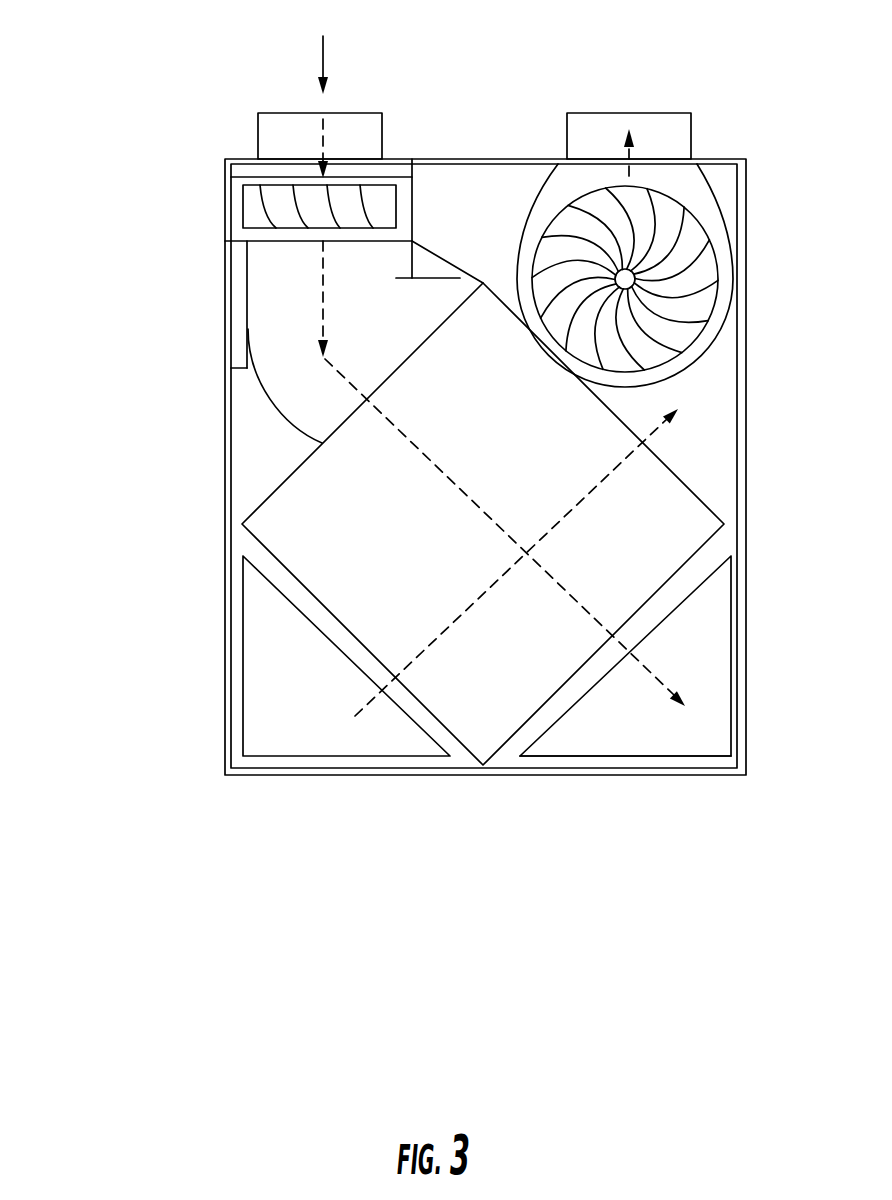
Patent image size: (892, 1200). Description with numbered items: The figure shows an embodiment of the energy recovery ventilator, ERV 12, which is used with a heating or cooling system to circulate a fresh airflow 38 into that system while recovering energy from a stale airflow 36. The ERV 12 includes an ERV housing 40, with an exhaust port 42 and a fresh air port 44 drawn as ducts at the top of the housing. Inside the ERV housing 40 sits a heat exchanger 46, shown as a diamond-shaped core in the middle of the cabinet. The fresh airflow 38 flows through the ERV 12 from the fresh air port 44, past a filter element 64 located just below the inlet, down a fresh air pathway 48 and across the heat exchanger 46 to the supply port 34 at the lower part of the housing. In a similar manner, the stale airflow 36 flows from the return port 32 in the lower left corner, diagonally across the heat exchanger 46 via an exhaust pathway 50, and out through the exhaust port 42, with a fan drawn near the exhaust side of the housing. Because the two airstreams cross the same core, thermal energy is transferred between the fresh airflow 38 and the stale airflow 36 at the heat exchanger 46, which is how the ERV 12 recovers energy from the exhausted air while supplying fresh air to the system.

The ERV 12 is at (142, 316).
The ERV housing 40 is at (223, 467).
The fresh air port 44 is at (262, 140).
The exhaust port 42 is at (590, 112).
The filter 64 is at (397, 191).
The fresh air pathway 48 is at (260, 300).
The heat exchanger 46 is at (404, 554).
The stale airflow 36 is at (373, 700).
The return port 32 is at (258, 655).
The fresh airflow 38 is at (698, 653).
The supply port 34 is at (657, 742).
The exhaust pathway 50 is at (718, 413).